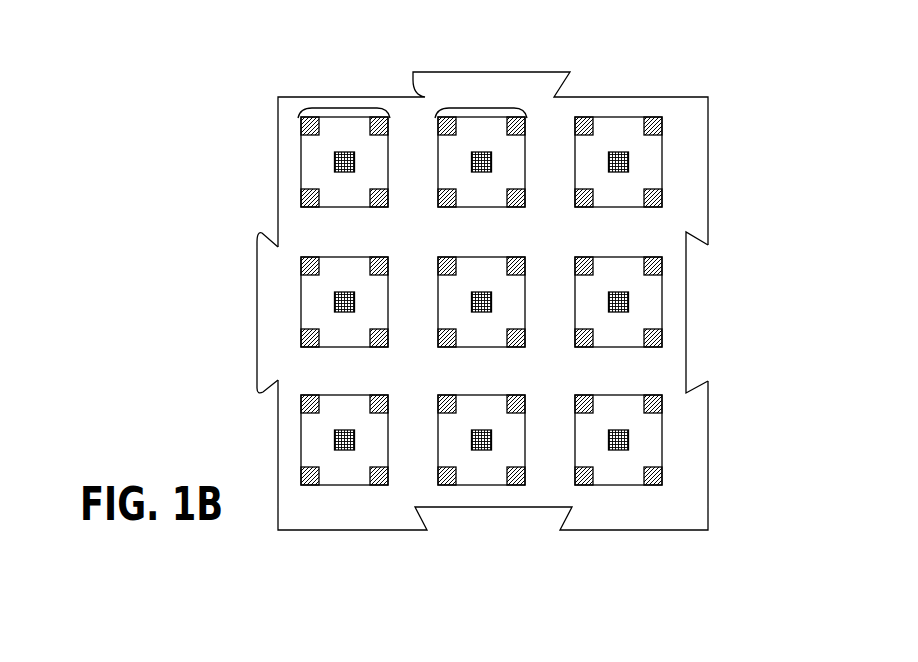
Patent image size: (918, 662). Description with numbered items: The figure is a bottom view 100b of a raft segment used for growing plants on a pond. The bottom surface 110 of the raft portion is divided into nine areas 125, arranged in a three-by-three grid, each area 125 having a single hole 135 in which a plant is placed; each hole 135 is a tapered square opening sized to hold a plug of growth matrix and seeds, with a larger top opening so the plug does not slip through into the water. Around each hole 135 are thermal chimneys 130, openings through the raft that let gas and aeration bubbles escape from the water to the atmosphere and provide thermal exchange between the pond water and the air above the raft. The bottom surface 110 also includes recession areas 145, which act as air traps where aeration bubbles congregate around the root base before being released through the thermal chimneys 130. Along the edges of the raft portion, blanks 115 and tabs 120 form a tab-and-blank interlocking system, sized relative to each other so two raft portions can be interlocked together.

The bottom view 100b is at (795, 512).
The bottom surface 110 is at (306, 526).
The blank 115 is at (689, 306).
The tab 120 is at (250, 312).
The area 125 is at (481, 108).
The thermal chimney 130 is at (297, 133).
The hole 135 is at (488, 157).
The recession area 145 is at (474, 489).